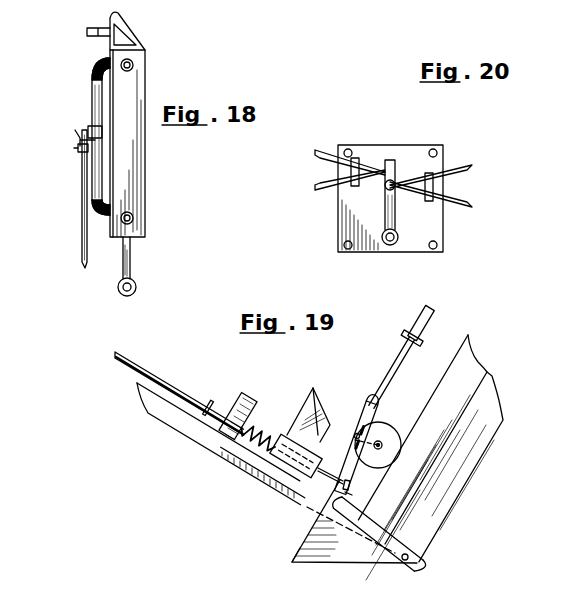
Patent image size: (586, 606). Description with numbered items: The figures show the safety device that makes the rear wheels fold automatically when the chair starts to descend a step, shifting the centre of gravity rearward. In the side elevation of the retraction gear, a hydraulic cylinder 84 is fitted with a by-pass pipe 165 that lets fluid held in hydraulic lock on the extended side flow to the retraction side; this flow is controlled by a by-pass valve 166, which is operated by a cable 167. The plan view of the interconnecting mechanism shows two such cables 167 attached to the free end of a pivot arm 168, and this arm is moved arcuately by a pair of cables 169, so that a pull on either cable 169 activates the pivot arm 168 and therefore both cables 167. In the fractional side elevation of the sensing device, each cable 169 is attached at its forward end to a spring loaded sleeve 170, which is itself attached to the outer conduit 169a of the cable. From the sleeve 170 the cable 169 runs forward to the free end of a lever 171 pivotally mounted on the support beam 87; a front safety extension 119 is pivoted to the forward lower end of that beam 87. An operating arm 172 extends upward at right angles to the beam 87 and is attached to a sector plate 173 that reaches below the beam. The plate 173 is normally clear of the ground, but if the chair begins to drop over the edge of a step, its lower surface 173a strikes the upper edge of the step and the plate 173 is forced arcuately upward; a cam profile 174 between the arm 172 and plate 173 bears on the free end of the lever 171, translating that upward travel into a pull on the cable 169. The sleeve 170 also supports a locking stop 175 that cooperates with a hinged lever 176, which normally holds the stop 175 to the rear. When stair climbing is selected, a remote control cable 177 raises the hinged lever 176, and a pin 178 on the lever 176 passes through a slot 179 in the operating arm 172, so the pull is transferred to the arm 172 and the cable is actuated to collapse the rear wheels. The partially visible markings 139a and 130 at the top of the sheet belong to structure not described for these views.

In FIG. 18, the hydraulic cylinder 84 is at (133, 182).
In FIG. 18, the by-pass pipe 165 is at (92, 95).
In FIG. 18, the by-pass valve 166 is at (76, 146).
In FIG. 18, the cable 167 is at (81, 232).
In FIG. 20, the cable 167 is at (323, 152).
In FIG. 20, the pivot arm 168 is at (394, 219).
In FIG. 19, the cable 169 is at (300, 490).
In FIG. 20, the cable 169 is at (466, 164).
In FIG. 19, the outer conduit 169a is at (168, 378).
In FIG. 19, the support beam 87 is at (176, 418).
In FIG. 19, the spring loaded sleeve 170 is at (278, 443).
In FIG. 19, the locking stop 175 is at (303, 415).
In FIG. 19, the remote control cable 177 is at (433, 321).
In FIG. 19, the operating arm 172 is at (368, 408).
In FIG. 19, the hinged lever 176 is at (383, 428).
In FIG. 19, the pin 178 is at (383, 436).
In FIG. 19, the slot 179 is at (381, 447).
In FIG. 19, the front safety extension 119 is at (491, 412).
In FIG. 19, the lever 171 is at (350, 497).
In FIG. 19, the sector plate 173 is at (360, 548).
In FIG. 19, the lower surface 173a is at (328, 555).
In FIG. 19, the cam profile 174 is at (292, 563).
In FIG. 18, the part 139a is at (168, 3).
In FIG. 18, the part 130 is at (268, 3).